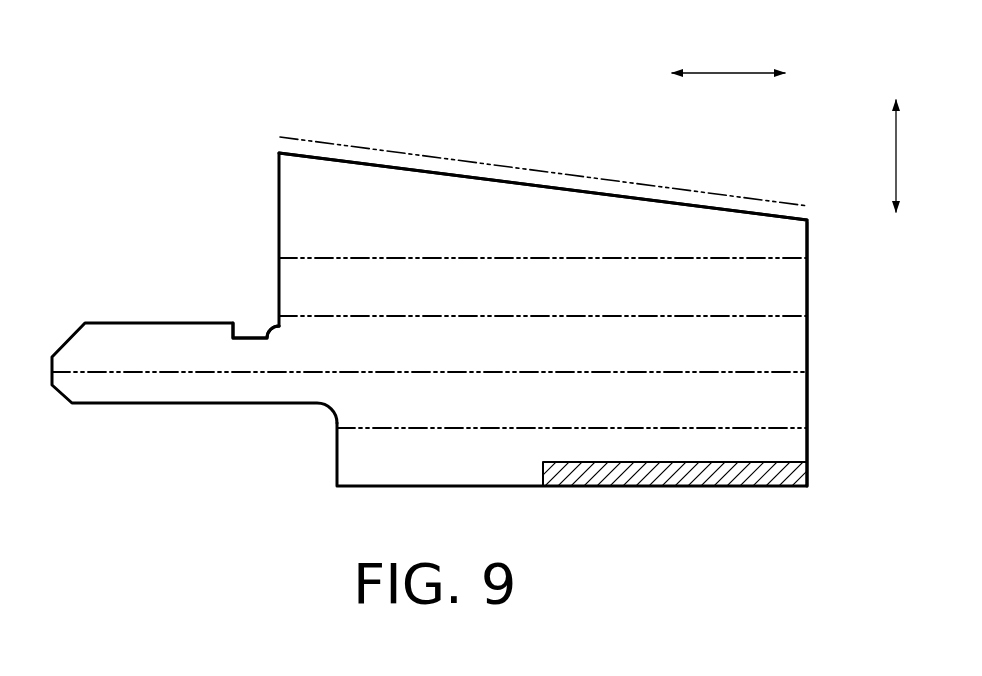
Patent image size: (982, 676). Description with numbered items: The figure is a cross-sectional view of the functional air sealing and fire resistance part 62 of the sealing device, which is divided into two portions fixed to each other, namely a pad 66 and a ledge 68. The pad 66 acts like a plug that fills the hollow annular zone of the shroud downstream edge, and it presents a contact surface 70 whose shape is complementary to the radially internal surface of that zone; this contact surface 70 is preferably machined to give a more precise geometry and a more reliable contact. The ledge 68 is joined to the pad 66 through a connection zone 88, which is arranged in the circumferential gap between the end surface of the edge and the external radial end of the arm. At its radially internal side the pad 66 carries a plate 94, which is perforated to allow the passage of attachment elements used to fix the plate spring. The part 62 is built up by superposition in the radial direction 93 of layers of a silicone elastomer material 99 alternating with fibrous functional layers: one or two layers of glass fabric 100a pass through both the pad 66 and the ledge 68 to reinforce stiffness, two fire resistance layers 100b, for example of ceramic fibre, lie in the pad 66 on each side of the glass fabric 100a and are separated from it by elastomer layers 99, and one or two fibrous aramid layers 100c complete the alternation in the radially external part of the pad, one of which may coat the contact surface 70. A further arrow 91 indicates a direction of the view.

The functional air sealing and fire resistance part 62 is at (577, 158).
The pad 66 is at (462, 205).
The ledge 68 is at (97, 406).
The contact surface 70 is at (535, 183).
The connection zone 88 is at (250, 330).
The axial direction 91 is at (728, 72).
The radial direction 93 is at (896, 158).
The plate 94 is at (703, 475).
The elastomer material layers 99 is at (793, 443).
The glass fabric layer 100a is at (115, 368).
The fire resistance layers 100b is at (320, 316).
The fibrous aramid layers 100c is at (362, 258).